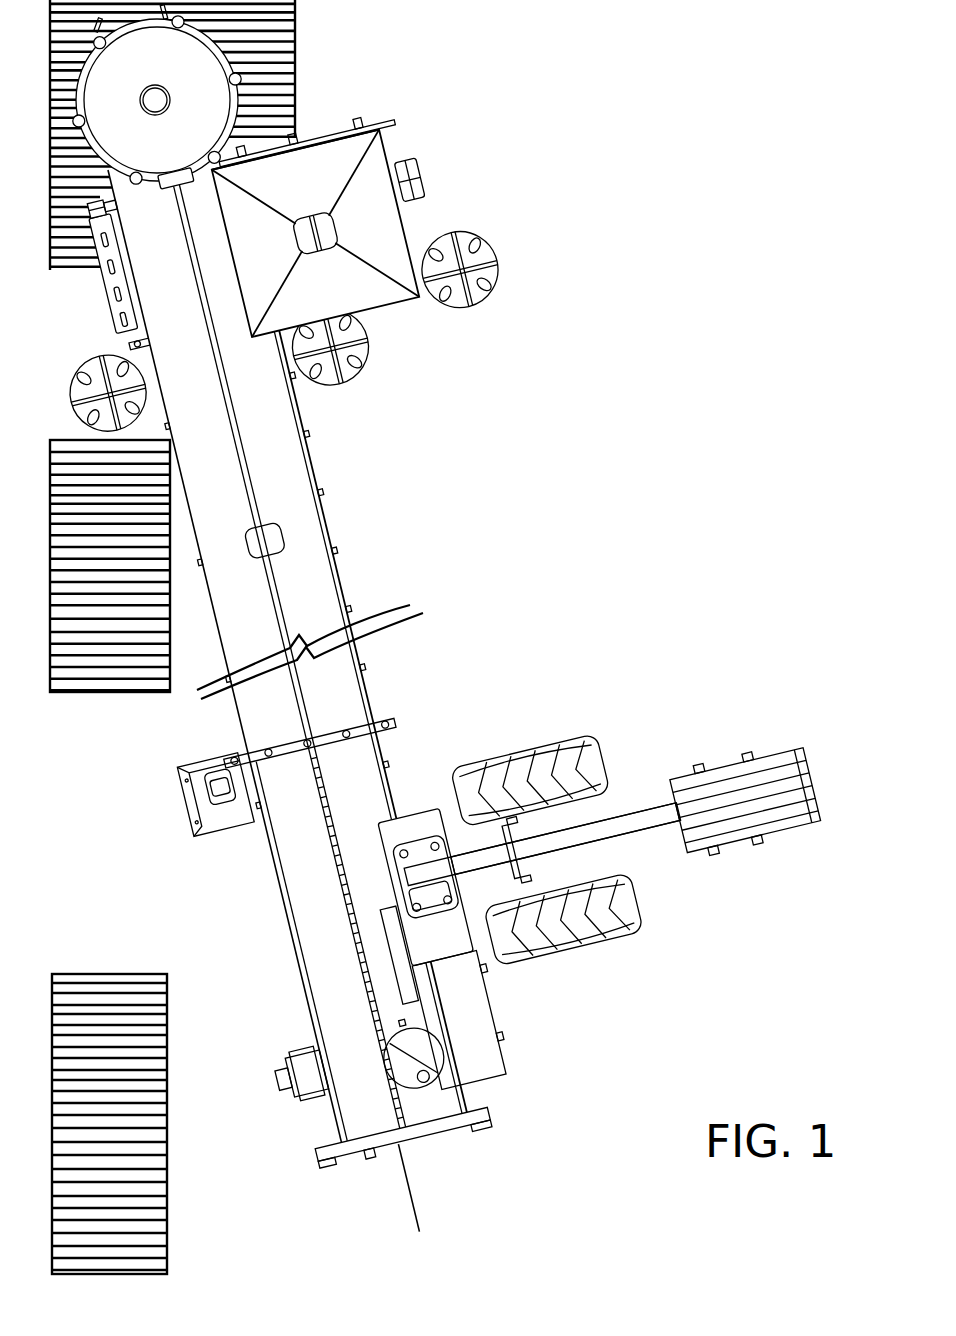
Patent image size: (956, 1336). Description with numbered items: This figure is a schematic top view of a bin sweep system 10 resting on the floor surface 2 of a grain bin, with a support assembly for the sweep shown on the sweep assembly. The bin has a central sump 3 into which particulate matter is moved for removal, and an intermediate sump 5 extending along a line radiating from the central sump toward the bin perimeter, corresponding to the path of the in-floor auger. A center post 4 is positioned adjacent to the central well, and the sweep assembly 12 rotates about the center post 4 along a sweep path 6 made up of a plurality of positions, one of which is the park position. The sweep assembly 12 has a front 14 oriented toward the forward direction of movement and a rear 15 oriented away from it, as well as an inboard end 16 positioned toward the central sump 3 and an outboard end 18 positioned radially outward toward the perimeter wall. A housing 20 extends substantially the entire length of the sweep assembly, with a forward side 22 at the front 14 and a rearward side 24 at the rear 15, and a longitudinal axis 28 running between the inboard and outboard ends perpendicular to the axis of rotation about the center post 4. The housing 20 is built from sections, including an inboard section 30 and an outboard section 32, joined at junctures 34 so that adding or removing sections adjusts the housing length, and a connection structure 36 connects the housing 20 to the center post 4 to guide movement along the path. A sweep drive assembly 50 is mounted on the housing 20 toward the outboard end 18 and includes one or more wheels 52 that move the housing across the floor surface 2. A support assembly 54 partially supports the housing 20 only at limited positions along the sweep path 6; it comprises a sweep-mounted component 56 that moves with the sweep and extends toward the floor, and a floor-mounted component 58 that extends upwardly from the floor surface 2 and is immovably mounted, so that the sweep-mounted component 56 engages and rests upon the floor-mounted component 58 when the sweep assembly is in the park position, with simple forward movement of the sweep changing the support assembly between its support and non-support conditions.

The floor surface 2 is at (478, 430).
The central sump 3 is at (290, 18).
The center post 4 is at (237, 82).
The intermediate sump 5 is at (103, 694).
The sweep path 6 is at (210, 1184).
The bin sweep system 10 is at (429, 628).
The sweep assembly 12 is at (375, 545).
The front 14 is at (268, 988).
The rear 15 is at (528, 1017).
The inboard end 16 is at (148, 222).
The outboard end 18 is at (470, 1104).
The housing 20 is at (350, 688).
The forward side 22 is at (287, 912).
The rearward side 24 is at (385, 758).
The longitudinal axis 28 is at (415, 1200).
The inboard section 30 is at (318, 487).
The outboard section 32 is at (305, 1030).
The juncture 34 is at (355, 736).
The connection structure 36 is at (100, 315).
The sweep drive assembly 50 is at (639, 803).
The wheel 52 is at (600, 760).
The support assembly 54 is at (155, 829).
The sweep-mounted component 56 is at (243, 785).
The floor-mounted component 58 is at (207, 800).